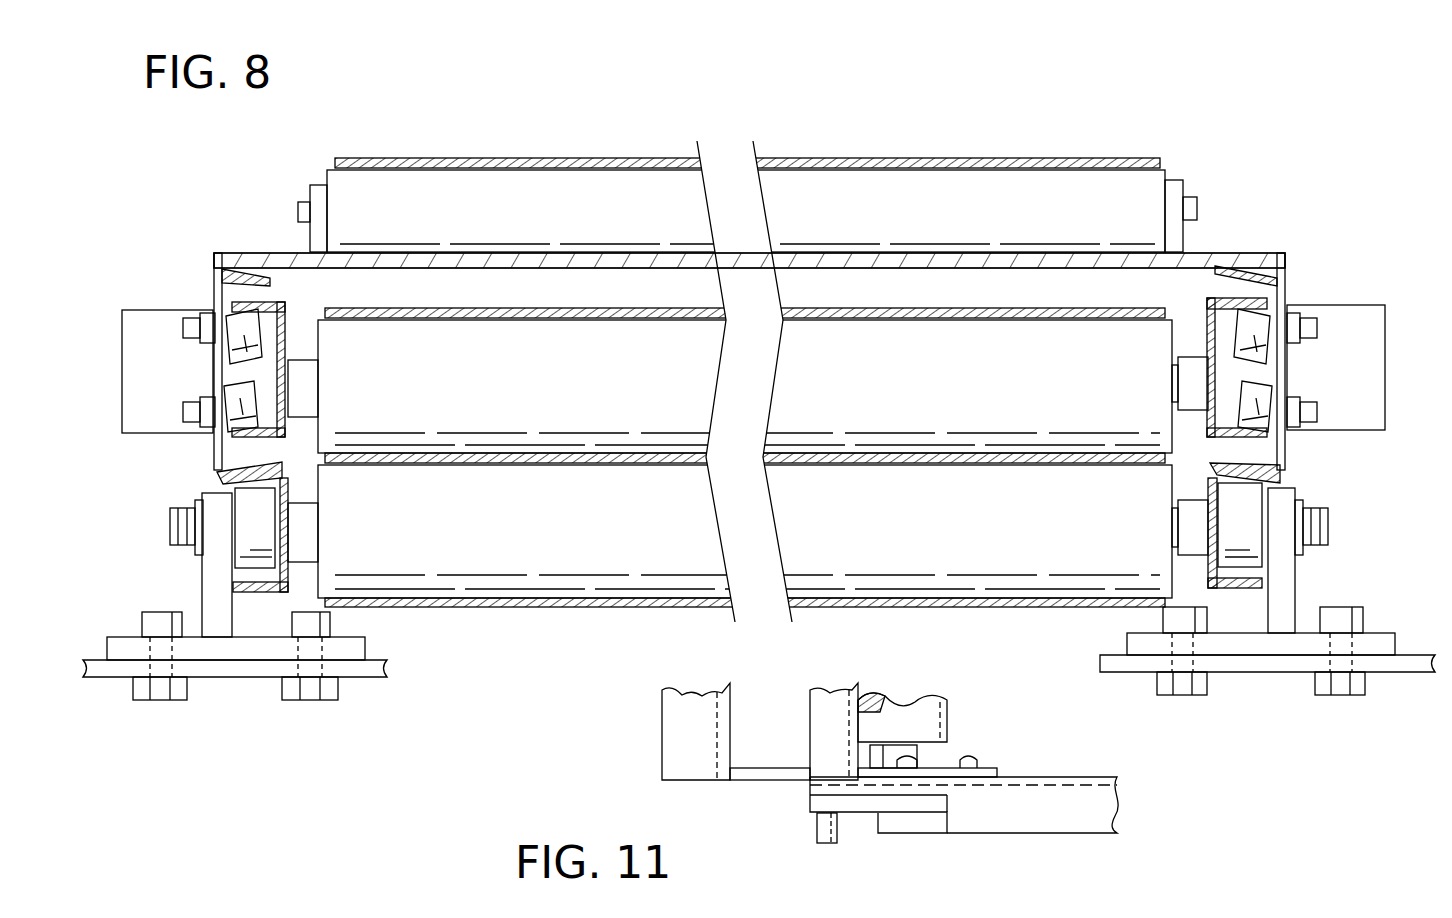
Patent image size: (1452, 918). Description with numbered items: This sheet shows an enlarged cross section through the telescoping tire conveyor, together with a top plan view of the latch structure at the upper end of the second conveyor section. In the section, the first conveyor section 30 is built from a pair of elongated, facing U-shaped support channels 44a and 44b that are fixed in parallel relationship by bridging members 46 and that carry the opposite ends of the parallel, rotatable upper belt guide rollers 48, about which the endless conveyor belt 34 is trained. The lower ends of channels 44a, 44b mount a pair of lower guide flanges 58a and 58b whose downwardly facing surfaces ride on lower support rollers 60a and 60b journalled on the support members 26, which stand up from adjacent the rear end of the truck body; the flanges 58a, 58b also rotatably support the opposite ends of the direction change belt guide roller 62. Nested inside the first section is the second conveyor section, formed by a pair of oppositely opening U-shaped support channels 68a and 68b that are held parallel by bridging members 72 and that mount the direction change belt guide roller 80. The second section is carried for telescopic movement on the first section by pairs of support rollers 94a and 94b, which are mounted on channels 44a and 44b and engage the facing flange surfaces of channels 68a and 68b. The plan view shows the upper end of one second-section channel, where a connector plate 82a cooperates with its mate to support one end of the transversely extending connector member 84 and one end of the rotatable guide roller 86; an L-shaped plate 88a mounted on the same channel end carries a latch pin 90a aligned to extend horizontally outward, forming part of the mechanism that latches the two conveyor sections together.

In FIG. 8, the support members 26 is at (213, 686).
In FIG. 8, the first conveyor section 30 is at (256, 232).
In FIG. 8, the endless conveyor belt 34 is at (792, 164).
In FIG. 8, the U-shaped support channel 44a is at (214, 287).
In FIG. 8, the U-shaped support channel 44b is at (1286, 271).
In FIG. 8, the bridging members 46 is at (1215, 251).
In FIG. 8, the upper belt guide rollers 48 is at (790, 202).
In FIG. 8, the lower guide flange 58a is at (222, 483).
In FIG. 8, the lower guide flange 58b is at (1283, 475).
In FIG. 8, the lower support roller 60a is at (244, 542).
In FIG. 8, the lower support roller 60b is at (1250, 536).
In FIG. 8, the direction change belt guide roller 62 is at (830, 612).
In FIG. 8, the U-shaped support channel 68a is at (270, 299).
In FIG. 11, the U-shaped support channel 68a is at (1093, 827).
In FIG. 8, the U-shaped support channel 68b is at (1248, 299).
In FIG. 11, the bridging members 72 is at (821, 739).
In FIG. 8, the direction change belt guide roller 80 is at (562, 399).
In FIG. 11, the connector plate 82a is at (953, 772).
In FIG. 11, the connector member 84 is at (676, 740).
In FIG. 11, the rotatable guide roller 86 is at (948, 713).
In FIG. 11, the L-shaped plate 88a is at (858, 828).
In FIG. 11, the latch pin 90a is at (833, 838).
In FIG. 8, the support rollers 94a is at (238, 378).
In FIG. 8, the support rollers 94b is at (1258, 353).